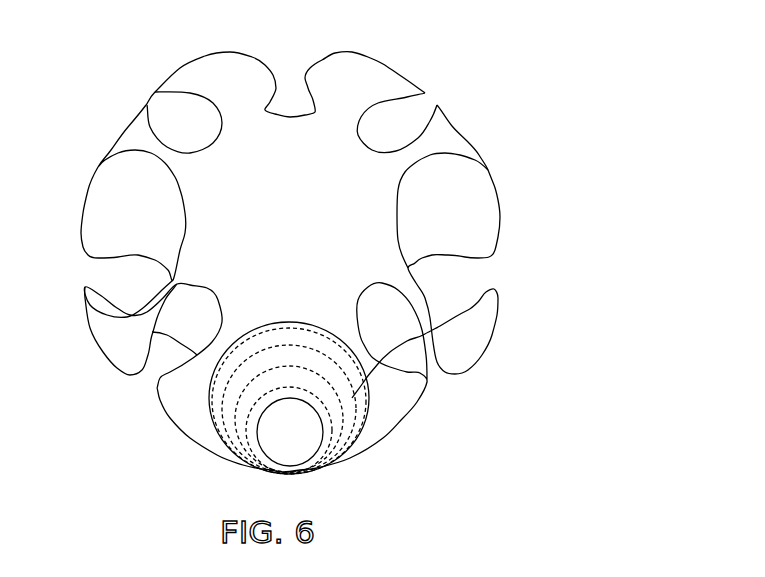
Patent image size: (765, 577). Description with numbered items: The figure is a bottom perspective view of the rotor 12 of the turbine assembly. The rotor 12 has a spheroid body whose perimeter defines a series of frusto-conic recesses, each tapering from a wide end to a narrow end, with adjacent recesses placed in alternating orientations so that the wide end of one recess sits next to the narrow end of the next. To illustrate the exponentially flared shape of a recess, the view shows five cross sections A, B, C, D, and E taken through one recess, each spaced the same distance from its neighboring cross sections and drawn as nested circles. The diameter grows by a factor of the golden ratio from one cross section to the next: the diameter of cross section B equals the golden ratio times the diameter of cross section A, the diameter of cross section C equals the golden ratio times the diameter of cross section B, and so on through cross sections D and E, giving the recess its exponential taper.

The rotor 12 is at (197, 97).
The cross section A is at (300, 402).
The cross section B is at (310, 388).
The cross section C is at (337, 396).
The cross section D is at (352, 382).
The cross section E is at (366, 406).